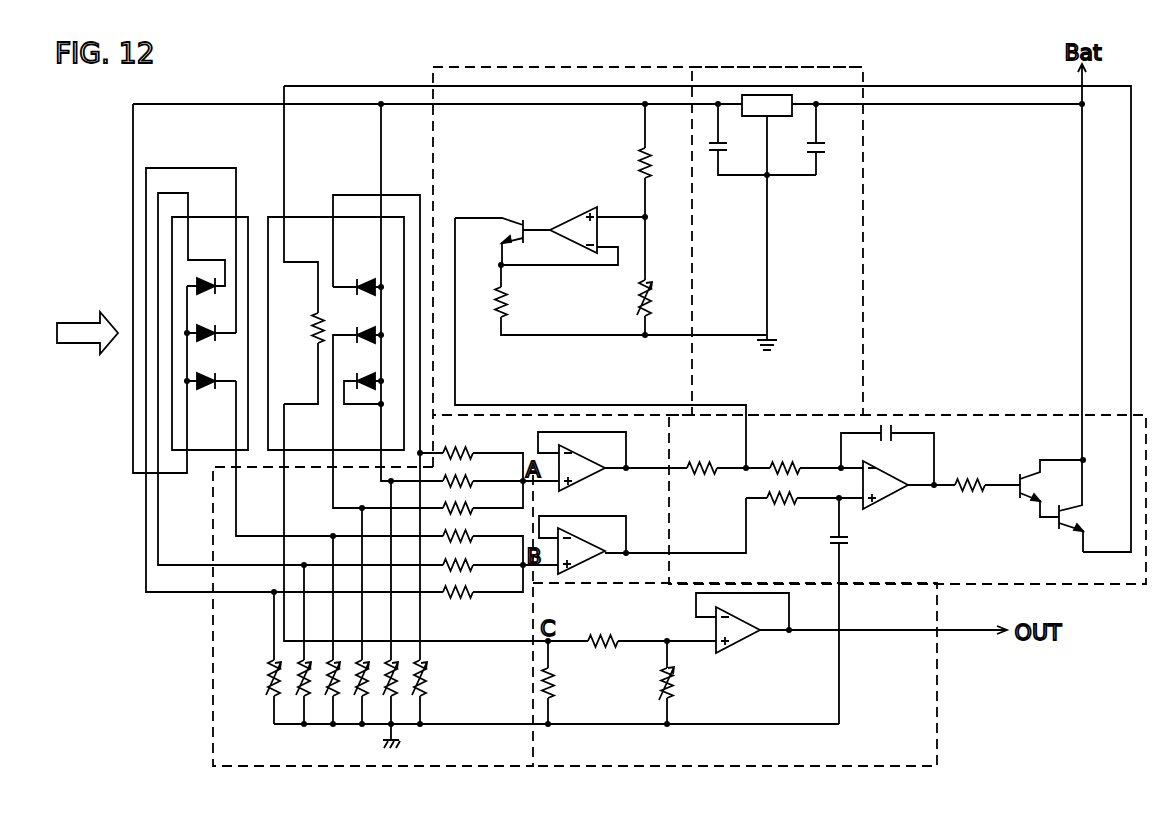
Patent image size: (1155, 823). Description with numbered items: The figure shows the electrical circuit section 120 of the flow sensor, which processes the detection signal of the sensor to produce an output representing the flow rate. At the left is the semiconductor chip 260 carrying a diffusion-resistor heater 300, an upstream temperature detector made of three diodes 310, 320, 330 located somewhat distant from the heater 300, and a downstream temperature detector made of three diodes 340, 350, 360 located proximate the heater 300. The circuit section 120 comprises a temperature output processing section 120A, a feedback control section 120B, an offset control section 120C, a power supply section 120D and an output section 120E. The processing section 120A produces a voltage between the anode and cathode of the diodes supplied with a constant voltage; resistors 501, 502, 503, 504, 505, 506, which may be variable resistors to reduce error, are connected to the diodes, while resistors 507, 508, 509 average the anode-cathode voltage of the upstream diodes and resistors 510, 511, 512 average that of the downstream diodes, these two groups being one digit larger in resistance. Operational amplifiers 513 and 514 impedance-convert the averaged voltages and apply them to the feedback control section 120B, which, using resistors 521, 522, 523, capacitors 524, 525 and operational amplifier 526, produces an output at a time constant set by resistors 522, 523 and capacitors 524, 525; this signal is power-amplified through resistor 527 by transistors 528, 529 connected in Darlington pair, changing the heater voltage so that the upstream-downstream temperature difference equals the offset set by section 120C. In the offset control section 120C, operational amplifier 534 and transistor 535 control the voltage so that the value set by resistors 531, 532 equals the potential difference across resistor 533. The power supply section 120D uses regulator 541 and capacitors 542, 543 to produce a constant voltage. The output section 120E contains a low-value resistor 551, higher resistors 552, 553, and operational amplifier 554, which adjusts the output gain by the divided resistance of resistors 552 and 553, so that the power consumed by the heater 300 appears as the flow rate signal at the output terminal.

The circuit section 120 is at (704, 64).
The temperature output processing section 120A is at (212, 670).
The feedback control section 120B is at (1113, 588).
The offset control section 120C is at (432, 75).
The power supply section 120D is at (848, 66).
The output section 120E is at (938, 745).
The semiconductor chip 260 is at (257, 193).
The heater 300 is at (316, 347).
The diode 310 is at (196, 284).
The diode 320 is at (196, 331).
The diode 330 is at (186, 383).
The diode 340 is at (362, 280).
The diode 350 is at (376, 336).
The diode 360 is at (376, 382).
The resistor 501 is at (273, 678).
The resistor 502 is at (305, 680).
The resistor 503 is at (332, 690).
The resistor 504 is at (362, 685).
The resistor 505 is at (396, 695).
The resistor 506 is at (428, 678).
The resistor 507 is at (456, 596).
The resistor 508 is at (466, 569).
The resistor 509 is at (462, 535).
The resistor 510 is at (462, 506).
The resistor 511 is at (462, 479).
The resistor 512 is at (462, 450).
The operational amplifier 513 is at (590, 559).
The operational amplifier 514 is at (586, 444).
The resistor 521 is at (703, 470).
The resistor 522 is at (785, 466).
The resistor 523 is at (785, 500).
The capacitor 524 is at (896, 495).
The capacitor 525 is at (887, 426).
The operational amplifier 526 is at (895, 475).
The resistor 527 is at (970, 480).
The transistor 528 is at (1018, 498).
The transistor 529 is at (1058, 529).
The resistor 531 is at (640, 160).
The resistor 532 is at (640, 312).
The resistor 533 is at (505, 300).
The operational amplifier 534 is at (570, 210).
The transistor 535 is at (523, 219).
The regulator 541 is at (770, 118).
The capacitor 542 is at (822, 150).
The capacitor 543 is at (714, 155).
The low-value resistor 551 is at (560, 683).
The resistor 552 is at (597, 633).
The resistor 553 is at (680, 685).
The operational amplifier 554 is at (752, 640).